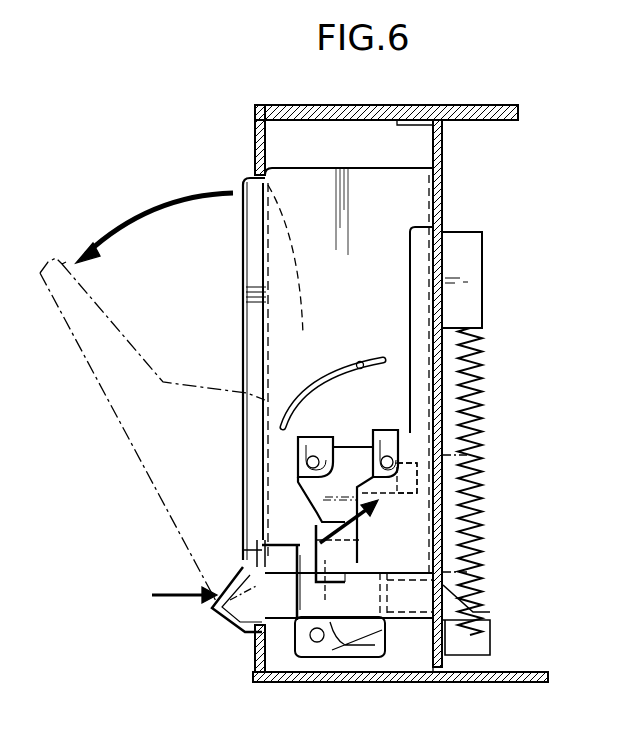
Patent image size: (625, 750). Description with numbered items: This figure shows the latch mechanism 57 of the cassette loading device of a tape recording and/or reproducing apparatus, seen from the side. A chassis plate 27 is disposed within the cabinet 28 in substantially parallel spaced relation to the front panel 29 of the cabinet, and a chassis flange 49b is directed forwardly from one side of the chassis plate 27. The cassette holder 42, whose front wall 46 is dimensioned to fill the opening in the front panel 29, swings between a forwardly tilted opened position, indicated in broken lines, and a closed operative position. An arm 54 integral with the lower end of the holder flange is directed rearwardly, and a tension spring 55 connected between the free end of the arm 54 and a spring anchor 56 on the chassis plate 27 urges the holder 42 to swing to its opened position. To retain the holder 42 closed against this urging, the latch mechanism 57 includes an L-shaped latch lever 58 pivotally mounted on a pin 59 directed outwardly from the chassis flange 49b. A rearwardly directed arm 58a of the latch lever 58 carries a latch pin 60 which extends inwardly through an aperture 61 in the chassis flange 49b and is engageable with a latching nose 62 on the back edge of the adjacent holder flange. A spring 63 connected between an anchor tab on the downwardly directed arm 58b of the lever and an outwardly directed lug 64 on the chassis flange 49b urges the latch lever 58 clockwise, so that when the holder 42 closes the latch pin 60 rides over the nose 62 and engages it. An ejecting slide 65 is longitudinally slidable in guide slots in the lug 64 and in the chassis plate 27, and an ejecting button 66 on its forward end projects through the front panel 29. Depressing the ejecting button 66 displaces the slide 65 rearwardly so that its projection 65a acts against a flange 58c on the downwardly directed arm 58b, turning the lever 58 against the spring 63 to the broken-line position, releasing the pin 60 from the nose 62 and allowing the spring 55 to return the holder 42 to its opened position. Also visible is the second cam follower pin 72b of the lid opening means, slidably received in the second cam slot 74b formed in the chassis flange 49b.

The chassis plate 27 is at (443, 147).
The cabinet 28 is at (470, 98).
The front panel 29 is at (262, 130).
The cassette holder 42 is at (233, 233).
The front wall 46 is at (241, 268).
The chassis flange 49b is at (373, 173).
The arm 54 is at (467, 645).
The tension spring 55 is at (471, 505).
The spring anchor 56 is at (477, 262).
The latch mechanism 57 is at (400, 512).
The latch lever 58 is at (290, 489).
The rearwardly directed arm 58a is at (348, 445).
The downwardly directed arm 58b is at (305, 516).
The flange 58c is at (358, 530).
The pin 59 is at (300, 462).
The latch pin 60 is at (398, 457).
The aperture 61 is at (386, 430).
The latching nose 62 is at (420, 472).
The spring 63 is at (363, 555).
The lug 64 is at (260, 634).
The ejecting slide 65 is at (400, 600).
The projection 65a is at (243, 548).
The ejecting button 66 is at (214, 608).
The second cam follower pin 72b is at (362, 361).
The second cam slot 74b is at (302, 366).